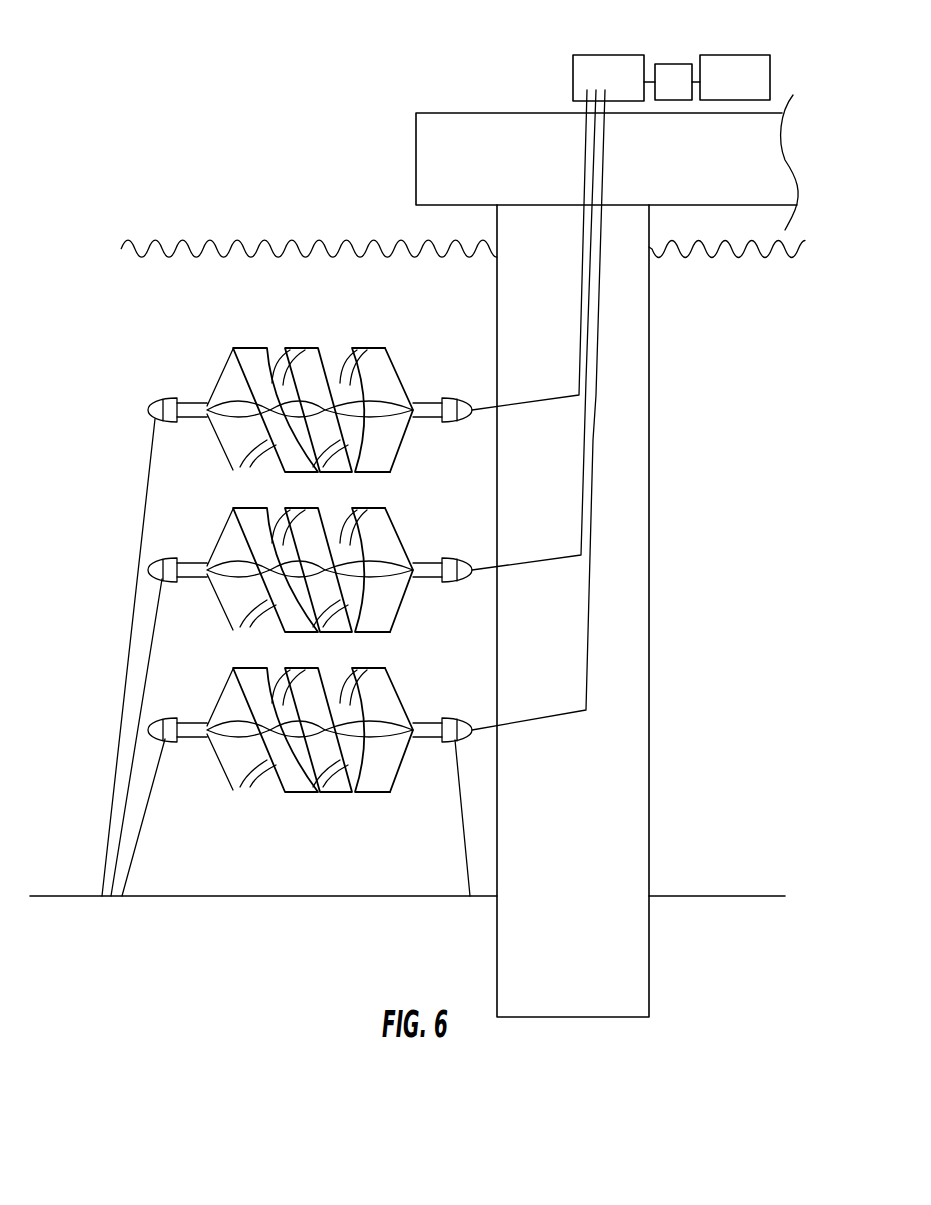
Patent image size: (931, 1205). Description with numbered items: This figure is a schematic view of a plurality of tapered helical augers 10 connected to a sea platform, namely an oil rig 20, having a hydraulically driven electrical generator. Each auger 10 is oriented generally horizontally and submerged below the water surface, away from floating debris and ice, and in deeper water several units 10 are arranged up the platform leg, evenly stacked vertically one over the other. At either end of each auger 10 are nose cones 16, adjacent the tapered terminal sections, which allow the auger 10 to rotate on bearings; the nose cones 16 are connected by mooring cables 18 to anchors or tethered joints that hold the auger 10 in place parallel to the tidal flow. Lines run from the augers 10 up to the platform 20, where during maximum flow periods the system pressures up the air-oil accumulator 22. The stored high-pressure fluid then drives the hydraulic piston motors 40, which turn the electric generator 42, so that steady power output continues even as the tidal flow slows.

The auger 10 is at (272, 373).
The nose cone 16 is at (125, 389).
The mooring cable 18 is at (122, 703).
The oil rig 20 is at (632, 432).
The air-oil accumulator 22 is at (587, 70).
The hydraulic piston motor 40 is at (673, 72).
The electric generator 42 is at (737, 72).